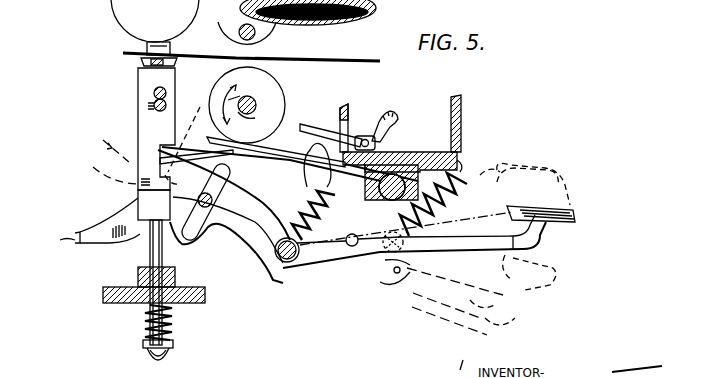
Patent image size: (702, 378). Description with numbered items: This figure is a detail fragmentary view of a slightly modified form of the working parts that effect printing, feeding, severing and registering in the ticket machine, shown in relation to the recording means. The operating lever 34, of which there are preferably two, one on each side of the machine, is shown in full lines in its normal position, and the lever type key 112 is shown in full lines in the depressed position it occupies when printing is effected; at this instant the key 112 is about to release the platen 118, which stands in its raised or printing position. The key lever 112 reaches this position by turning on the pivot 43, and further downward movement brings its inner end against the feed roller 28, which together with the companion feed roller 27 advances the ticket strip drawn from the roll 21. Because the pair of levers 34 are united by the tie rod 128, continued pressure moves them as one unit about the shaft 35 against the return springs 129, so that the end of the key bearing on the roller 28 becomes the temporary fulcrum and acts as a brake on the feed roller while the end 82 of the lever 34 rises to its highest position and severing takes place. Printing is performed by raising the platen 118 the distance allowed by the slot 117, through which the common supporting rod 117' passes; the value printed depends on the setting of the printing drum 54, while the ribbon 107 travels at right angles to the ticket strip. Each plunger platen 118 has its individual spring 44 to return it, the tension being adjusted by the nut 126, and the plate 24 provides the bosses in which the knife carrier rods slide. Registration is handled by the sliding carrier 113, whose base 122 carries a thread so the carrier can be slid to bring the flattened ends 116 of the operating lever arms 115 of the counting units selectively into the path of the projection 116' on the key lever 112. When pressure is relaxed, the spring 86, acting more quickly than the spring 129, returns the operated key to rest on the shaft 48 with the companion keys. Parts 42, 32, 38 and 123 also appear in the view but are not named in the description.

The printing drum 54 is at (142, 33).
The ribbon 107 is at (146, 47).
The flange 42 is at (138, 62).
The platen 118 is at (138, 82).
The slot 117 is at (133, 93).
The common supporting rod 117' is at (133, 104).
The extremity of lever 82 is at (108, 140).
The plate 24 is at (103, 297).
The spring 44 is at (170, 323).
The nut 126 is at (145, 353).
The feed roller 27 is at (287, 40).
The feed roller 28 is at (284, 86).
The hub shaft 32 is at (251, 115).
The link 38 is at (175, 155).
The key lever 112 is at (284, 165).
The spring 86 is at (306, 200).
The base of sliding member 122 is at (398, 224).
The roll 21 is at (391, 189).
The sliding carrier 113 is at (458, 150).
The post 123 is at (462, 98).
The flattened end 116 is at (329, 125).
The projection 116' is at (326, 155).
The operating lever arm 115 is at (398, 126).
The return spring 129 is at (480, 175).
The shaft 48 is at (222, 228).
The operating lever 34 is at (257, 245).
The shaft 35 is at (280, 266).
The tie rod 128 is at (346, 246).
The pivot 43 is at (390, 283).